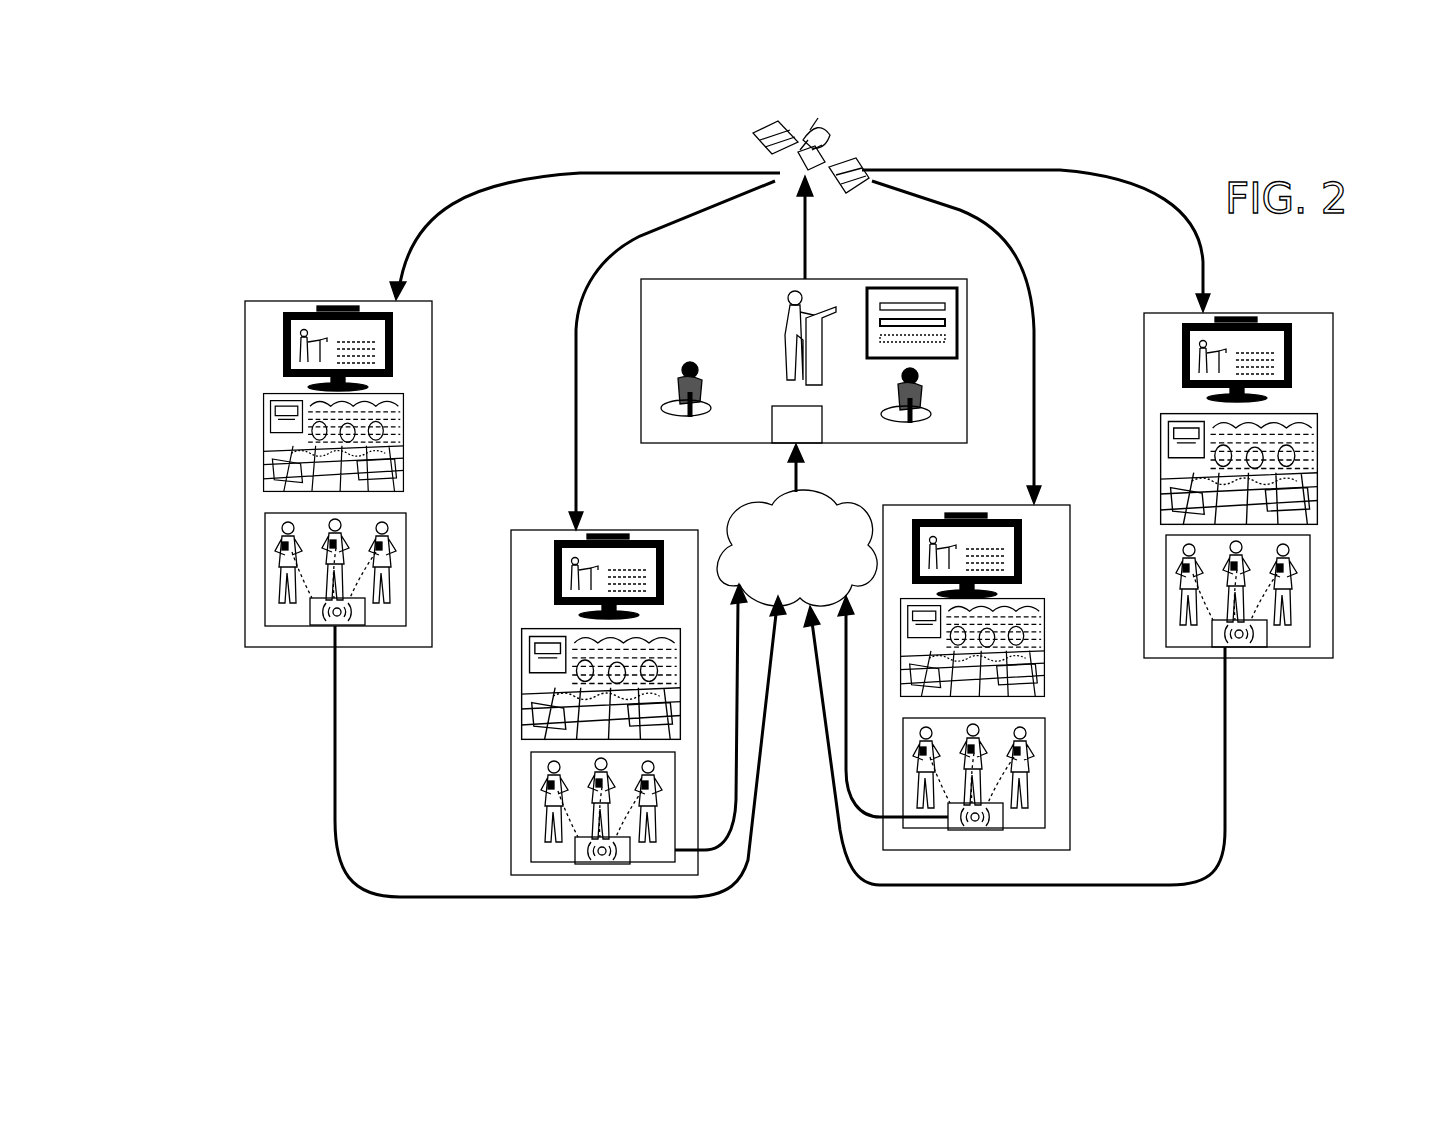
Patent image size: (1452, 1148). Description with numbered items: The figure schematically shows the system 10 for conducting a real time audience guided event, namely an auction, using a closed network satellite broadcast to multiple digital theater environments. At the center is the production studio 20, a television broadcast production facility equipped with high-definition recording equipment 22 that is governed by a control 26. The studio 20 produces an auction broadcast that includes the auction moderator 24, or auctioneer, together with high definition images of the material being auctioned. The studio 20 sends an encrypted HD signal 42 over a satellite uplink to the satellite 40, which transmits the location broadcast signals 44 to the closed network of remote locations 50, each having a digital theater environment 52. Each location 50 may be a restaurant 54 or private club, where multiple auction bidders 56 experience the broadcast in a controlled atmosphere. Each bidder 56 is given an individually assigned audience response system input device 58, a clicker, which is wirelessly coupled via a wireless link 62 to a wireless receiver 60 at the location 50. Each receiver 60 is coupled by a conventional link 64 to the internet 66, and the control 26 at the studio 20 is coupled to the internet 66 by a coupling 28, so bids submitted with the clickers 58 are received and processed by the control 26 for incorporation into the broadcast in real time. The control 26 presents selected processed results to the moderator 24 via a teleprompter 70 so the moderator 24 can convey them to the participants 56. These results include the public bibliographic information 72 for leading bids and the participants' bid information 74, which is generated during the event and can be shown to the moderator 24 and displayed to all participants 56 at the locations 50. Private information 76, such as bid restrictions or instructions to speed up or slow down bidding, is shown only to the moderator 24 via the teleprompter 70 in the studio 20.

The system 10 is at (358, 160).
The production studio 20 is at (762, 279).
The high-definition recording equipment 22 is at (700, 392).
The auction moderator 24 is at (785, 300).
The control 26 is at (814, 438).
The coupling 28 is at (790, 480).
The satellite 40 is at (832, 138).
The encrypted HD signal 42 is at (806, 240).
The location broadcast signals 44 is at (503, 178).
The location 50 is at (262, 300).
The digital theater environment 52 is at (330, 306).
The restaurant 54 is at (406, 425).
The auction bidder 56 is at (385, 560).
The audience response system input device 58 is at (378, 542).
The wireless receiver 60 is at (345, 625).
The wireless link 62 is at (330, 620).
The conventional link 64 is at (695, 830).
The internet 66 is at (722, 512).
The teleprompter 70 is at (905, 288).
The public bibliographic information 72 is at (930, 302).
The bid information 74 is at (945, 322).
The private information 76 is at (945, 340).